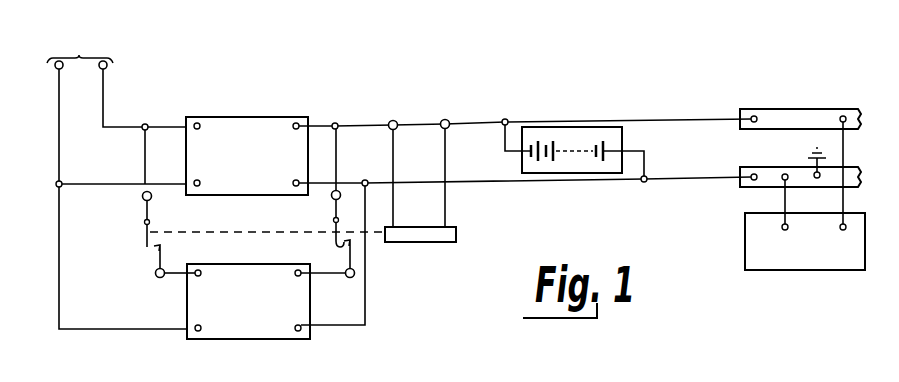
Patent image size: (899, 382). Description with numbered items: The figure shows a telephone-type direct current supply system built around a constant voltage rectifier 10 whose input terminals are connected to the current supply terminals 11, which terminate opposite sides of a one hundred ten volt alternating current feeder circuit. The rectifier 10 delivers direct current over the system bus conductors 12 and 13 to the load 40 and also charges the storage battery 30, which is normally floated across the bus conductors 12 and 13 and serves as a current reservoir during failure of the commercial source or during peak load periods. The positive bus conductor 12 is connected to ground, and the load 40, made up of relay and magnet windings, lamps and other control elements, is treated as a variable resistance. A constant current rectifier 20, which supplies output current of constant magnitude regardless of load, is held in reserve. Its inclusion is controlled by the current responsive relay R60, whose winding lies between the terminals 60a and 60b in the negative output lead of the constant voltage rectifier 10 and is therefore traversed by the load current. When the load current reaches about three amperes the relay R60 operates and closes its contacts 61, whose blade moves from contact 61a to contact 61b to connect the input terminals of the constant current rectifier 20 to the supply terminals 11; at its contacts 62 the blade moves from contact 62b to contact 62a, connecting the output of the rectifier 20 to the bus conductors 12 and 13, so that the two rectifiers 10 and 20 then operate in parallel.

The constant voltage rectifier 10 is at (258, 117).
The current supply terminals 11 is at (101, 70).
The positive bus conductor 12 is at (778, 167).
The bus conductor 13 is at (788, 109).
The constant current rectifier 20 is at (205, 264).
The storage battery 30 is at (623, 133).
The load 40 is at (745, 228).
The terminal 60a is at (398, 108).
The terminal 60b is at (449, 106).
The current responsive relay R60 is at (432, 243).
The contacts 61 is at (148, 248).
The contact 61a is at (142, 196).
The contact 61b is at (156, 277).
The contacts 62 is at (330, 247).
The contact 62a is at (352, 279).
The contact 62b is at (331, 198).